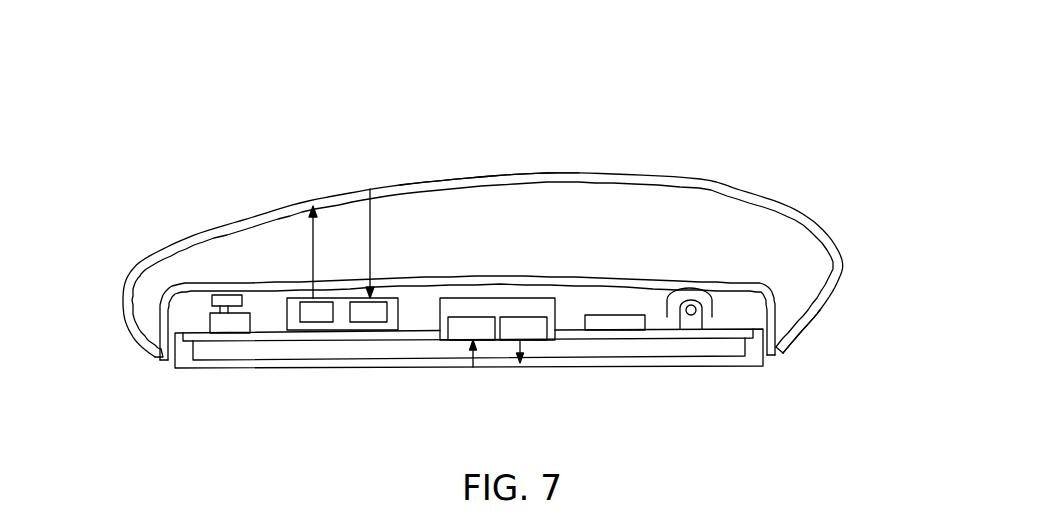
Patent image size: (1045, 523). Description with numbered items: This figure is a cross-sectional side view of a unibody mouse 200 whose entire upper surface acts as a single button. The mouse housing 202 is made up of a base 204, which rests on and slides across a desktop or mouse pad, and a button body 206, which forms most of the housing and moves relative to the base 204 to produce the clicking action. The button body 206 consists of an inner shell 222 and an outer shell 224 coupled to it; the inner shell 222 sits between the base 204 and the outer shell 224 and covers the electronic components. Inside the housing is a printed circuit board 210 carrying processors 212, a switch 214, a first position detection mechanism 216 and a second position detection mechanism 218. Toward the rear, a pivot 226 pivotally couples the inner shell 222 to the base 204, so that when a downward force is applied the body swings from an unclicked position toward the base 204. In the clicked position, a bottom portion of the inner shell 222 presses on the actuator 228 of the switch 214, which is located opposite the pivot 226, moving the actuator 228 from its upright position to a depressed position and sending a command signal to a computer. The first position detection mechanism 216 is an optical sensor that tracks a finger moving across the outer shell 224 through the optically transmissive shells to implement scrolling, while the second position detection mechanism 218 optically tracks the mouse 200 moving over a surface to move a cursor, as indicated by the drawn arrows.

The unibody mouse 200 is at (592, 127).
The mouse housing 202 is at (138, 270).
The base 204 is at (640, 360).
The button body 206 is at (788, 332).
The printed circuit board 210 is at (267, 334).
The processor 212 is at (610, 316).
The switch 214 is at (232, 322).
The first position detection mechanism 216 is at (342, 326).
The second position detection mechanism 218 is at (556, 316).
The inner shell 222 is at (472, 276).
The outer shell 224 is at (420, 184).
The pivot 226 is at (713, 315).
The actuator 228 is at (220, 306).